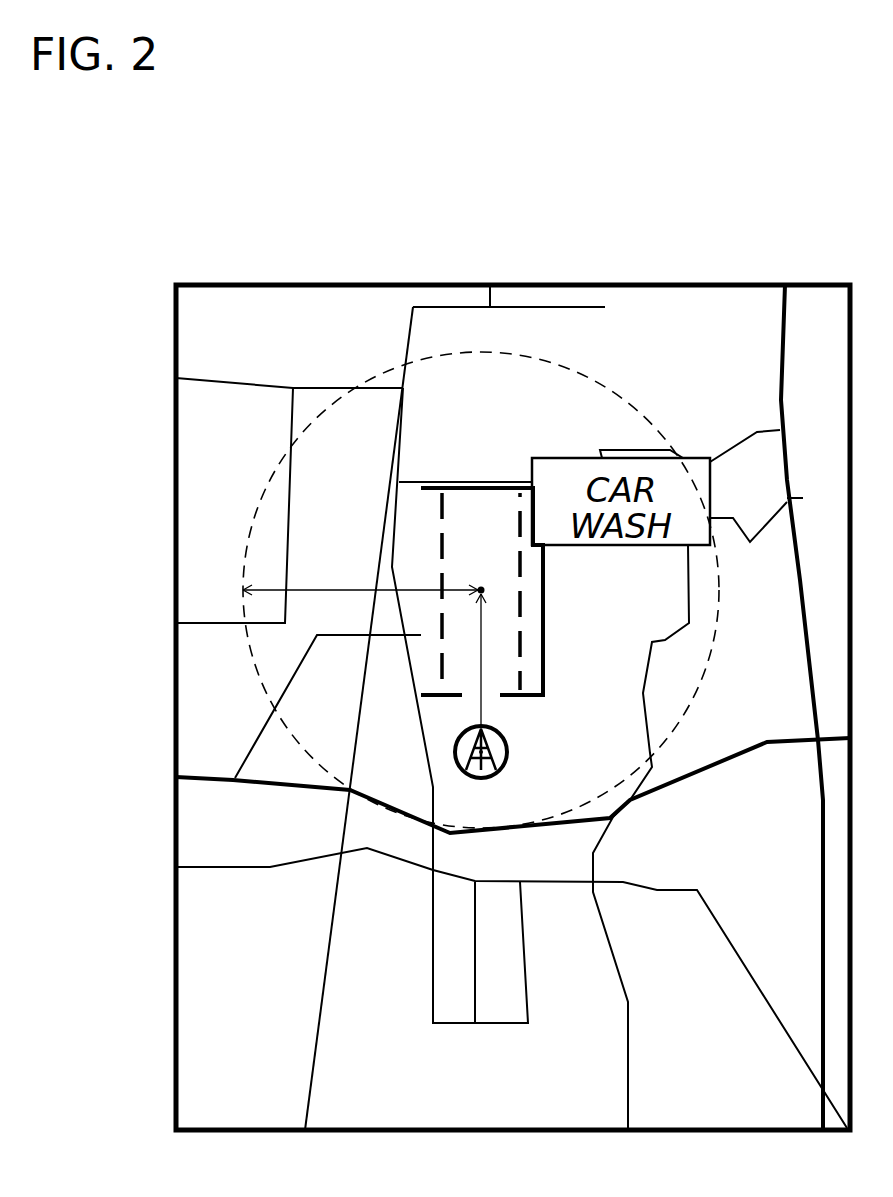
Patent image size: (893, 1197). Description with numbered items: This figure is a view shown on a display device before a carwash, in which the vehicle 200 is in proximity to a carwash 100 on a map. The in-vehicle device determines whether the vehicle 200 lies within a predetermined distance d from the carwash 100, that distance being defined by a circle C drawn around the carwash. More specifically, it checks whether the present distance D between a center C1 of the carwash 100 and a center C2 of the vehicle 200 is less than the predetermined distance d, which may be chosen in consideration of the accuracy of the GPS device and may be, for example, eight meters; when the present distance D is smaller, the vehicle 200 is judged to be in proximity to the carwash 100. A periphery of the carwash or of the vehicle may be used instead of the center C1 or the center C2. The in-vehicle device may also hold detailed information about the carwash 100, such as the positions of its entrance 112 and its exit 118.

The carwash 100 is at (315, 591).
The entrance 112 is at (475, 697).
The exit 118 is at (480, 487).
The vehicle 200 is at (453, 752).
The circle C is at (292, 456).
The center of the carwash C1 is at (481, 590).
The center of the vehicle C2 is at (478, 752).